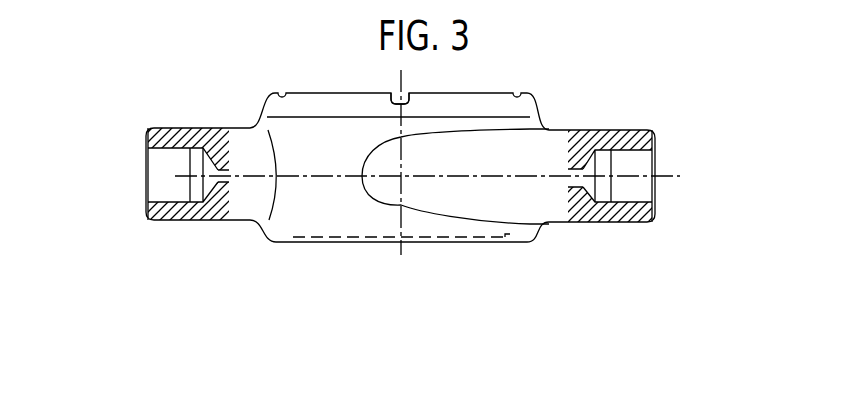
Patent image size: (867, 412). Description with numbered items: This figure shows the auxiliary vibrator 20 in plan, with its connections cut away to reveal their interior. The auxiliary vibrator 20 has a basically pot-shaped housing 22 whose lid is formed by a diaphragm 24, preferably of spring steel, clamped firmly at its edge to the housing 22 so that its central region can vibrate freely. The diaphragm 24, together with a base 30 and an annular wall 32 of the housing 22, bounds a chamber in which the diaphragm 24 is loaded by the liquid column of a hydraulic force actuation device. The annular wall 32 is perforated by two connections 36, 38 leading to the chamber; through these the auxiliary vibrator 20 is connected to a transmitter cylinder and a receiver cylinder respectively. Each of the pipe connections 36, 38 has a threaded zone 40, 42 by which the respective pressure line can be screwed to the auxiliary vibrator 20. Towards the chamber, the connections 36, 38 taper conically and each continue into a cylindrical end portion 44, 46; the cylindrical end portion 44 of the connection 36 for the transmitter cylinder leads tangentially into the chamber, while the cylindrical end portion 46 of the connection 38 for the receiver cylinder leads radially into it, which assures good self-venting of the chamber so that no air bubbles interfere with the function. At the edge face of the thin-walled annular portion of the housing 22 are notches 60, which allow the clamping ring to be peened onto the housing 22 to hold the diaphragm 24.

The auxiliary vibrator 20 is at (646, 141).
The housing 22 is at (141, 137).
The diaphragm 24 is at (448, 93).
The base 30 is at (365, 238).
The annular wall 32 is at (478, 195).
The connection 36 is at (632, 152).
The connection 38 is at (173, 192).
The threaded zone 40 is at (618, 194).
The threaded zone 42 is at (163, 149).
The cylindrical end portion 44 is at (583, 179).
The cylindrical end portion 46 is at (222, 174).
The notches 60 is at (397, 96).